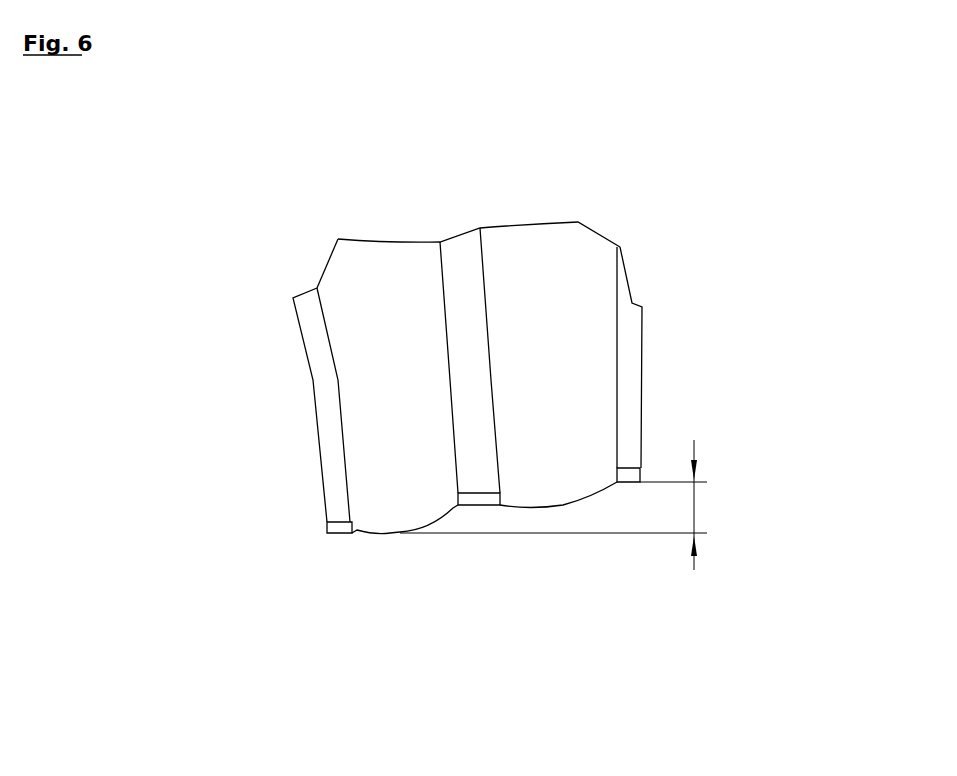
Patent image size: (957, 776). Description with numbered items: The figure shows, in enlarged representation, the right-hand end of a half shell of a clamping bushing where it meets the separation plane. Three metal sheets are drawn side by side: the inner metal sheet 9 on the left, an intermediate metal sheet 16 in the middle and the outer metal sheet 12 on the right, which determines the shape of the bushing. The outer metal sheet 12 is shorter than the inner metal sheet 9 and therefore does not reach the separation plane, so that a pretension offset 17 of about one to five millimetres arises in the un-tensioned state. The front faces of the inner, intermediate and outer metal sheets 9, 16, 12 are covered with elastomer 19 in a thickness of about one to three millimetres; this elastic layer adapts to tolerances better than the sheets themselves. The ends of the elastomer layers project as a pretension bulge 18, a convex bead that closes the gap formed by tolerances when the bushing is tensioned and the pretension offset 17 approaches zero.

The inner metal sheet 9 is at (323, 388).
The outer metal sheet 12 is at (630, 352).
The intermediate metal sheet 16 is at (473, 347).
The pretension offset 17 is at (693, 505).
The pretension bulge 18 is at (400, 532).
The elastomer front-face covering 19 is at (338, 527).